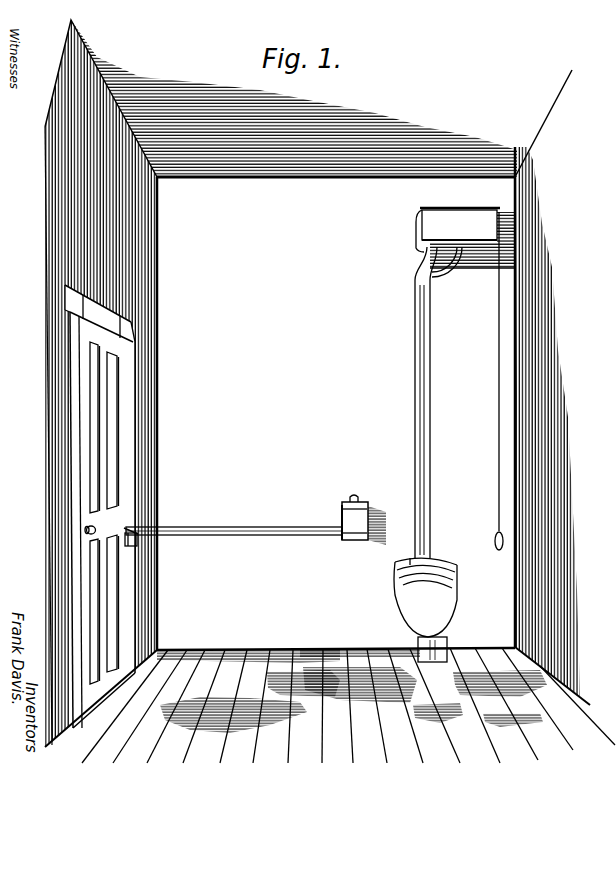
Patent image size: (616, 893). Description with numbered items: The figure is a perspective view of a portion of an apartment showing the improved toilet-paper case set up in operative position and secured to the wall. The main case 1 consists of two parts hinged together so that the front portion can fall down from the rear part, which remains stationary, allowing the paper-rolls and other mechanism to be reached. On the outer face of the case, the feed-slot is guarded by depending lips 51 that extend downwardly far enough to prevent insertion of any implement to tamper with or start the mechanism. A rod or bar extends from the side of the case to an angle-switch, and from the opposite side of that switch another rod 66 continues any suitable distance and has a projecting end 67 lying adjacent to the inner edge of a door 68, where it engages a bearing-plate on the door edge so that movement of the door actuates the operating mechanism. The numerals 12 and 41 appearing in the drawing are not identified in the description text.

The main case 1 is at (341, 516).
The water-closet bowl and flush tank 12 is at (454, 435).
The valve stem 41 is at (357, 501).
The depending lips 51 is at (350, 541).
The rod 66 is at (263, 535).
The projecting end 67 is at (128, 547).
The door 68 is at (126, 535).